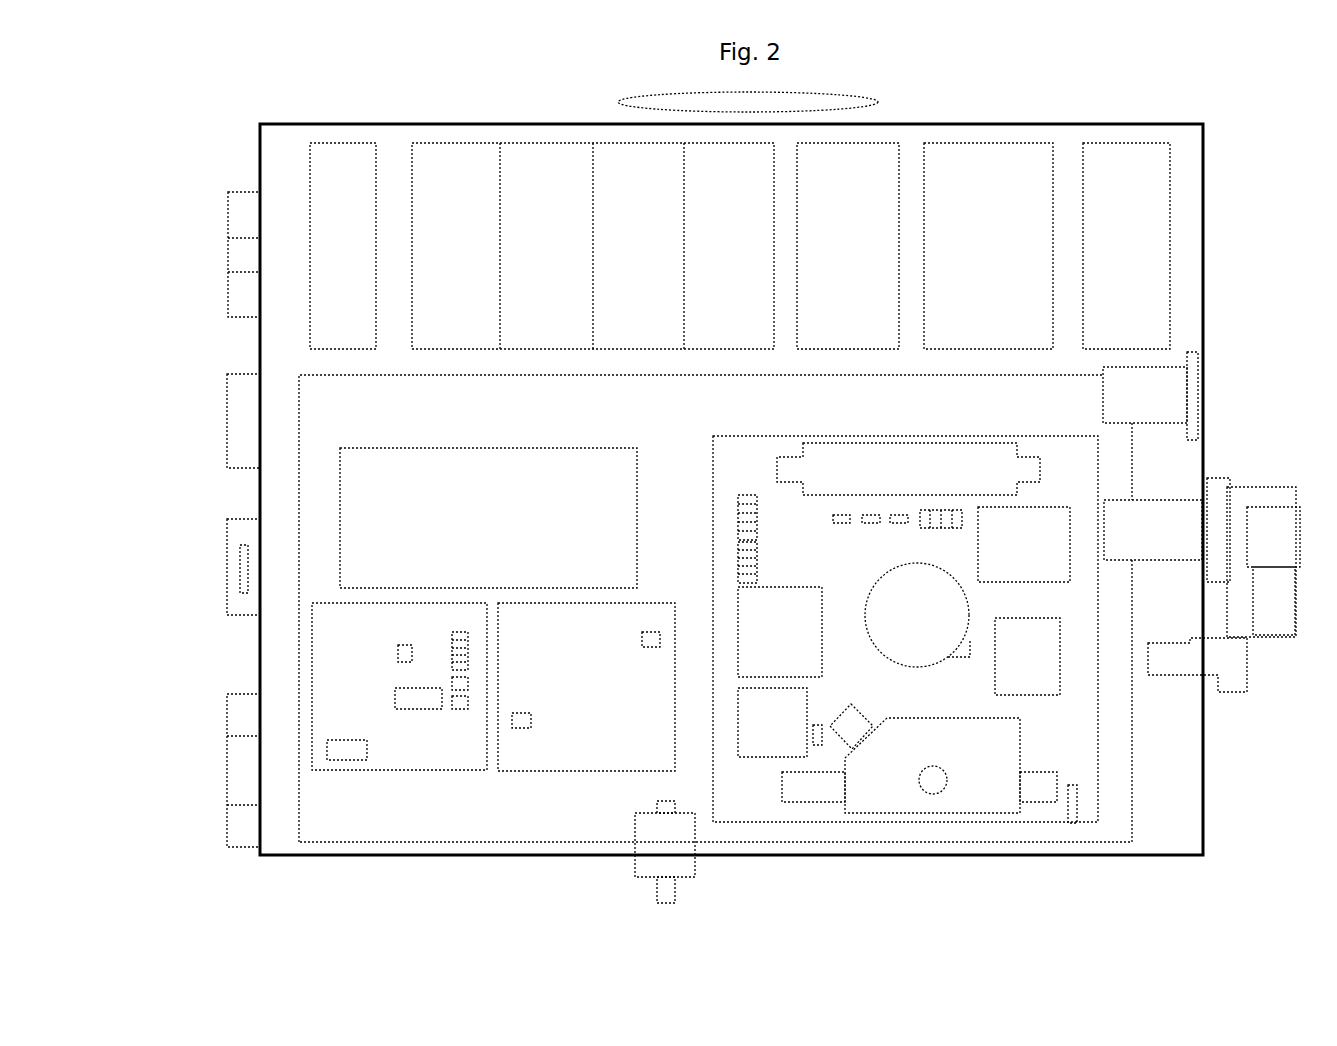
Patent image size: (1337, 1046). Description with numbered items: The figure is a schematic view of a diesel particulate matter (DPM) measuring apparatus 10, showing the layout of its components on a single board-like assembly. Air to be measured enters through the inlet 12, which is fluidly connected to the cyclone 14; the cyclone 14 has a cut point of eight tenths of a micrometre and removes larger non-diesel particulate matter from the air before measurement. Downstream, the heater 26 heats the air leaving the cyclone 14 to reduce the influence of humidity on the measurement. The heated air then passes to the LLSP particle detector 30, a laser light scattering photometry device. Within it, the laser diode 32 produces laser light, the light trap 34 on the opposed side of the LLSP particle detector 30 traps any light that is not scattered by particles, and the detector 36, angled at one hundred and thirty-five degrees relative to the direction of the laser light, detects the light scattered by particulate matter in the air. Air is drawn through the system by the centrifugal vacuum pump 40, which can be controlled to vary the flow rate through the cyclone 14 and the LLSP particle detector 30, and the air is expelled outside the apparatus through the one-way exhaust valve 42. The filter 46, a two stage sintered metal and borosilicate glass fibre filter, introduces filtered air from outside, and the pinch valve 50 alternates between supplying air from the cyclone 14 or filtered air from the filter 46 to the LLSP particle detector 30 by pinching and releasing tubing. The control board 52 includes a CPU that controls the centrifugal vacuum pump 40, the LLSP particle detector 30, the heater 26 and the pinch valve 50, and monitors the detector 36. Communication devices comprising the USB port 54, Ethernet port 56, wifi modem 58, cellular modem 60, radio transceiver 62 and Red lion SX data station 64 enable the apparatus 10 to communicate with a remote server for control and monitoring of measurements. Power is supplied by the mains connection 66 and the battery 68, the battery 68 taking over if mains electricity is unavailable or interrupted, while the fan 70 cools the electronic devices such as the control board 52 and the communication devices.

The DPM measuring apparatus 10 is at (241, 99).
The inlet 12 is at (664, 893).
The cyclone 14 is at (665, 830).
The heater 26 is at (933, 785).
The LLSP particle detector 30 is at (983, 783).
The laser diode 32 is at (1033, 788).
The light trap 34 is at (813, 790).
The detector 36 is at (853, 730).
The centrifugal vacuum pump 40 is at (908, 605).
The one-way exhaust valve 42 is at (1230, 680).
The filter 46 is at (1190, 520).
The pinch valve 50 is at (1164, 400).
The control board 52 is at (1070, 703).
The USB port 54 is at (242, 406).
The Ethernet port 56 is at (346, 170).
The wifi modem 58 is at (327, 302).
The cellular modem 60 is at (452, 177).
The radio transceiver 62 is at (880, 165).
The Red lion SX data station 64 is at (977, 163).
The mains connection 66 is at (242, 602).
The battery 68 is at (512, 482).
The fan 70 is at (1148, 170).